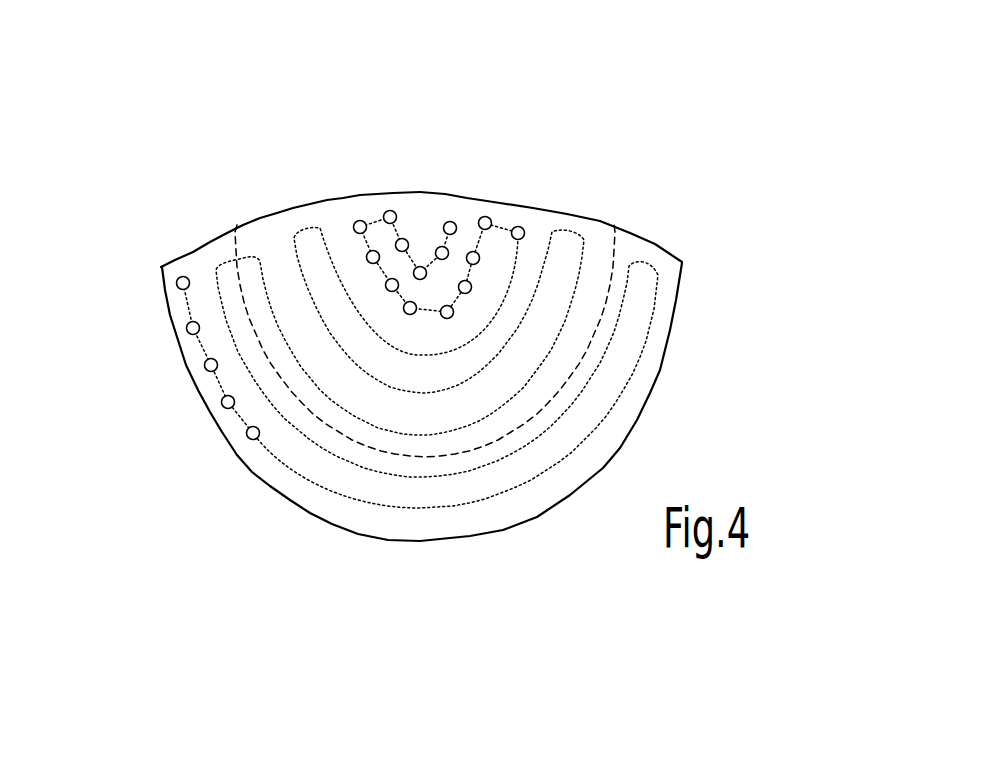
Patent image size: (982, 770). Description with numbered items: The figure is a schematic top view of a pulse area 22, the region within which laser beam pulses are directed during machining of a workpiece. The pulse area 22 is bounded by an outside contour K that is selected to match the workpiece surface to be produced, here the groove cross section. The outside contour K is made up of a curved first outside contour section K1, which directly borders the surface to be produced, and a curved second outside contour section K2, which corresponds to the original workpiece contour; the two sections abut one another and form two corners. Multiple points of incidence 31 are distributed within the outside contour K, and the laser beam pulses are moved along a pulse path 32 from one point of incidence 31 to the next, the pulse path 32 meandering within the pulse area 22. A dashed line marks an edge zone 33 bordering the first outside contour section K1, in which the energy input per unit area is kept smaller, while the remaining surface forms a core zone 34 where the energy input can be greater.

The pulse area 22 is at (462, 346).
The points of incidence 31 is at (177, 290).
The pulse path 32 is at (427, 510).
The edge zone 33 is at (654, 214).
The core zone 34 is at (336, 180).
The outside contour K is at (439, 369).
The first outside contour section K1 is at (650, 393).
The second outside contour section K2 is at (440, 193).